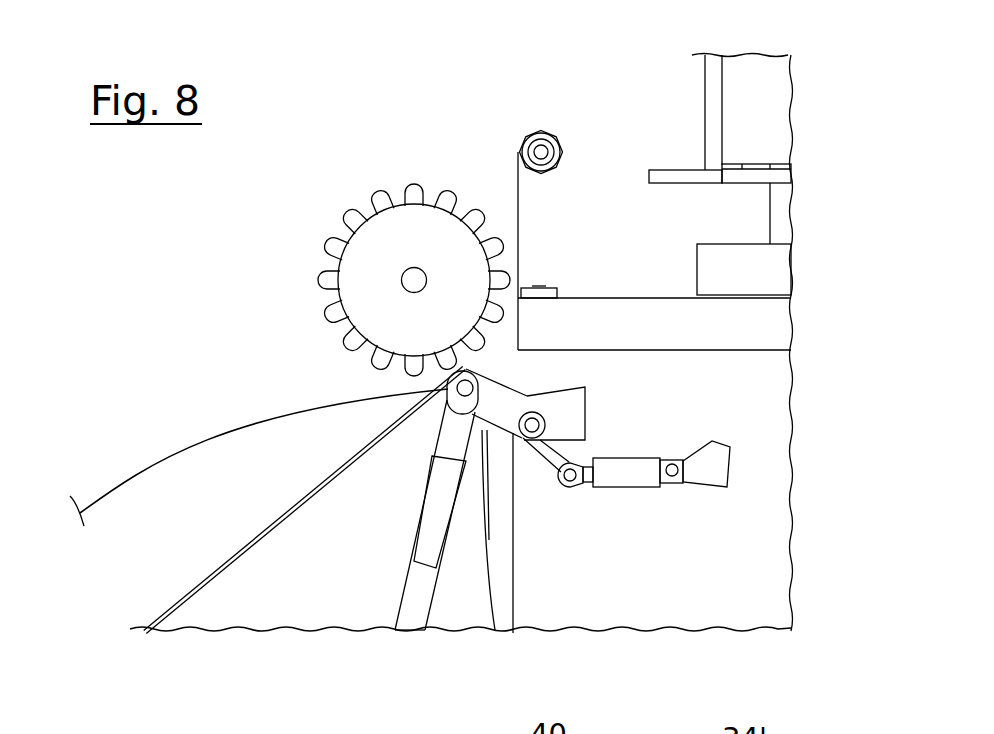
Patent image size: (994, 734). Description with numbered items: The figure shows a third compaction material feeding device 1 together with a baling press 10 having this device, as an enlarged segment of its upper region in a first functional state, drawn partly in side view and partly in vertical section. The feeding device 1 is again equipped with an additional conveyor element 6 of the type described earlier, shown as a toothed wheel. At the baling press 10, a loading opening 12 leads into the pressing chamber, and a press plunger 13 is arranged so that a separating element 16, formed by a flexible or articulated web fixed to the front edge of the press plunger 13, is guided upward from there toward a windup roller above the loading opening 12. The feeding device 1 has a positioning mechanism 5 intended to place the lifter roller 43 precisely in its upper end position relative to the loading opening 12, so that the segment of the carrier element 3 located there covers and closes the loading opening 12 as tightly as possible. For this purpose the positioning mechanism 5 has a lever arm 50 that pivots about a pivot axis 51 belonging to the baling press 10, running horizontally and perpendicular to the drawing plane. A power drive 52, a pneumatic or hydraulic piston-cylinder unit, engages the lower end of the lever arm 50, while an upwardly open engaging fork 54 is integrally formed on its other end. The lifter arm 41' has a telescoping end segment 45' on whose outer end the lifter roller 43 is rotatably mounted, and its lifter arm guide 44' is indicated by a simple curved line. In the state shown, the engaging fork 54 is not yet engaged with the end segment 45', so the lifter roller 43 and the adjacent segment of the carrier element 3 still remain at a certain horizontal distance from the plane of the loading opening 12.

The compaction material feeding device 1 is at (160, 360).
The carrier element 3 is at (262, 522).
The positioning mechanism 5 is at (530, 460).
The additional conveyor element 6 is at (327, 338).
The baling press 10 is at (606, 96).
The loading opening 12 is at (513, 553).
The press plunger 13 is at (630, 323).
The separating element 16 is at (518, 218).
The lifter arm 41' is at (422, 658).
The lifter roller 43 is at (476, 368).
The lifter arm guide 44' is at (259, 473).
The telescoping end segment 45' is at (411, 515).
The lever arm 50 is at (558, 447).
The pivot axis 51 is at (537, 422).
The power drive 52 is at (640, 472).
The engaging fork 54 is at (468, 412).